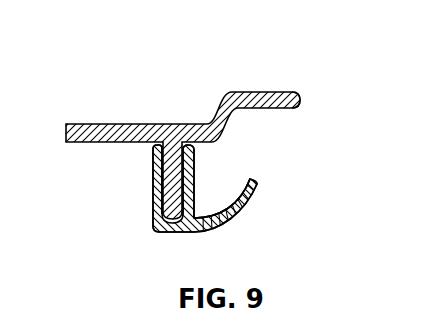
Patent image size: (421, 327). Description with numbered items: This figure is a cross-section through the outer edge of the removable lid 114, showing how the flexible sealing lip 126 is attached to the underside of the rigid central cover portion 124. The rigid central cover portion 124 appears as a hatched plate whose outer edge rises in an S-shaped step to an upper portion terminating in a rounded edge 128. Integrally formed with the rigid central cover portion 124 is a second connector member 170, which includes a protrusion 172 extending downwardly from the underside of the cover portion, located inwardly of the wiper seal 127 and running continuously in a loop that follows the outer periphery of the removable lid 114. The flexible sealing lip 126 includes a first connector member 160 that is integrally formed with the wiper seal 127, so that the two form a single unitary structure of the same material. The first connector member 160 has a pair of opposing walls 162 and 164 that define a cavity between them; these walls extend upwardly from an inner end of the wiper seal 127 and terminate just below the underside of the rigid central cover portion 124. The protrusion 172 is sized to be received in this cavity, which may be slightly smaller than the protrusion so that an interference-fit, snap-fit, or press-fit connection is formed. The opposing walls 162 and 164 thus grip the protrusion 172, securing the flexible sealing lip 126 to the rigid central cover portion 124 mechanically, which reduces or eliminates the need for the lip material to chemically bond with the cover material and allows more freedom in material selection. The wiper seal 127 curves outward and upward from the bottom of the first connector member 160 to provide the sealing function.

The removable lid 114 is at (210, 111).
The rigid central cover portion 124 is at (102, 122).
The upper lip portion 128 is at (290, 92).
The first connector member 160 is at (178, 213).
The second connector member 170 is at (153, 164).
The protrusion 172 is at (156, 182).
The wall 164 is at (155, 219).
The wall 162 is at (192, 166).
The wiper seal 127 is at (255, 190).
The flexible sealing lip 126 is at (237, 225).